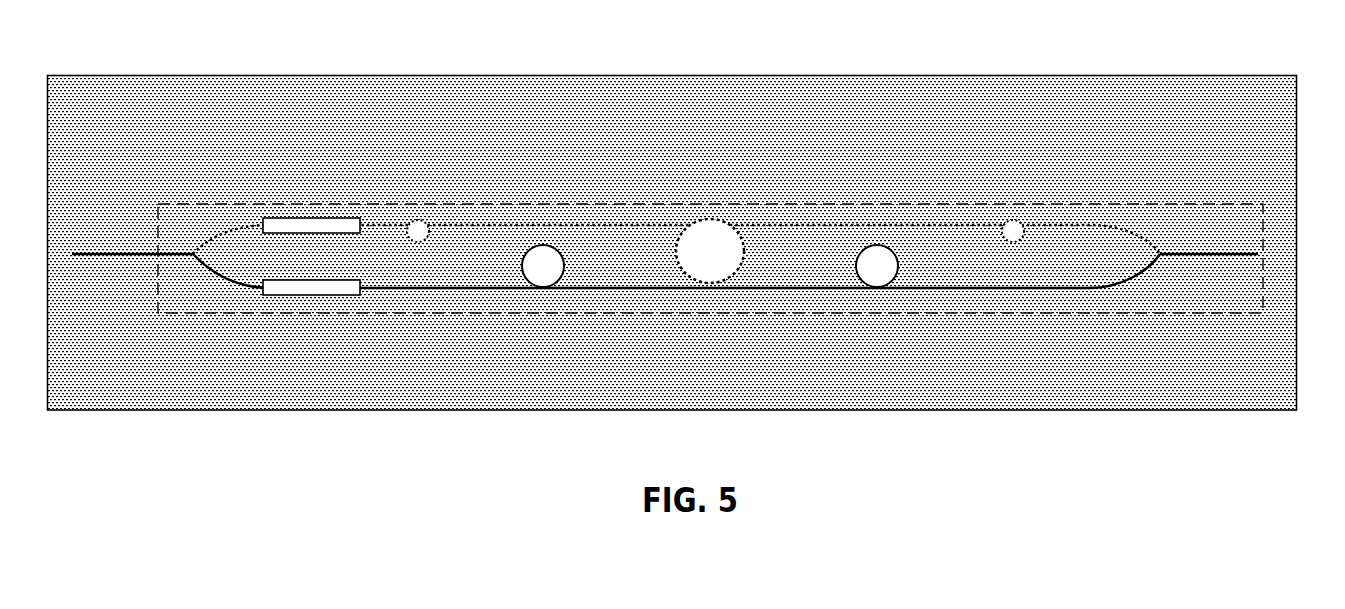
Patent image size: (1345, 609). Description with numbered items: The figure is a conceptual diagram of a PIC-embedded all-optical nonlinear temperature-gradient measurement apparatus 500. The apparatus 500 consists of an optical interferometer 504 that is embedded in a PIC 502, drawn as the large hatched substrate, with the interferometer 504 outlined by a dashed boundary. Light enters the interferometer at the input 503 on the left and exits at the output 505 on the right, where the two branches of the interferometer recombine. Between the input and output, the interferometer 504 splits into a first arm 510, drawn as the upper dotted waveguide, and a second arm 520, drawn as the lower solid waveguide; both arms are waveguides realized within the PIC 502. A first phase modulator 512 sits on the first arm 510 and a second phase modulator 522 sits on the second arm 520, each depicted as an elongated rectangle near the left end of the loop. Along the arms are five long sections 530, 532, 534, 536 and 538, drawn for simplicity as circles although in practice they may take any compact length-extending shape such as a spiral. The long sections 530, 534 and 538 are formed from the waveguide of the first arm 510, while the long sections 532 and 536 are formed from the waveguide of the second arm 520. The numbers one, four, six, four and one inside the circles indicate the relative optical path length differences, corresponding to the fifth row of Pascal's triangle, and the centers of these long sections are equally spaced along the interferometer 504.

The PIC-embedded all-optical nonlinear temperature-gradient measurement apparatus 500 is at (118, 38).
The PIC 502 is at (118, 390).
The input light 503 is at (146, 240).
The optical interferometer 504 is at (1263, 222).
The output light 505 is at (1234, 240).
The first arm 510 is at (593, 226).
The first phase modulator 512 is at (333, 217).
The second arm 520 is at (1005, 288).
The second phase modulator 522 is at (337, 296).
The long section 530 is at (430, 229).
The long section 532 is at (565, 288).
The long section 534 is at (735, 226).
The long section 536 is at (897, 288).
The long section 538 is at (1024, 227).